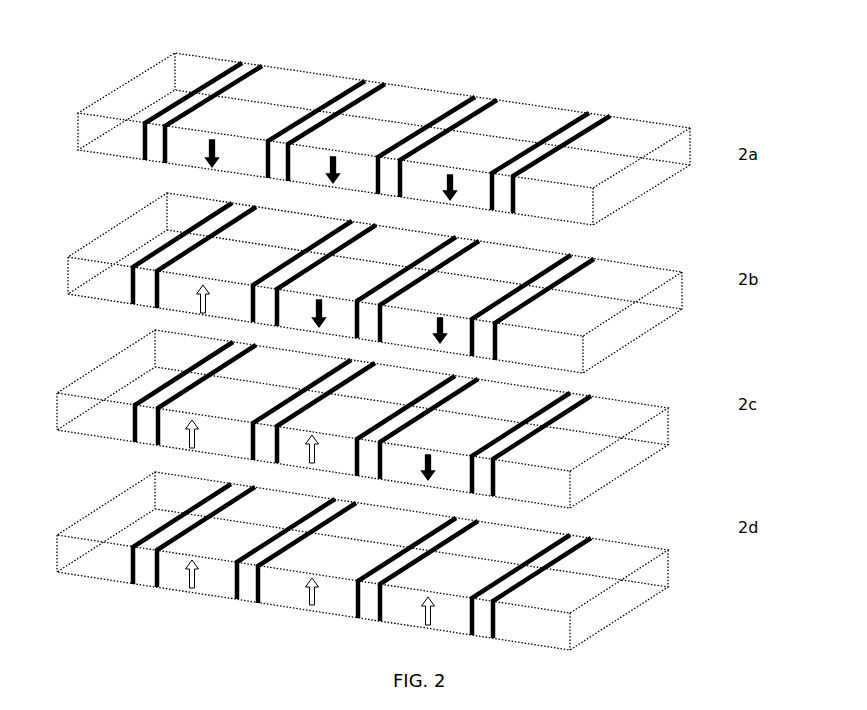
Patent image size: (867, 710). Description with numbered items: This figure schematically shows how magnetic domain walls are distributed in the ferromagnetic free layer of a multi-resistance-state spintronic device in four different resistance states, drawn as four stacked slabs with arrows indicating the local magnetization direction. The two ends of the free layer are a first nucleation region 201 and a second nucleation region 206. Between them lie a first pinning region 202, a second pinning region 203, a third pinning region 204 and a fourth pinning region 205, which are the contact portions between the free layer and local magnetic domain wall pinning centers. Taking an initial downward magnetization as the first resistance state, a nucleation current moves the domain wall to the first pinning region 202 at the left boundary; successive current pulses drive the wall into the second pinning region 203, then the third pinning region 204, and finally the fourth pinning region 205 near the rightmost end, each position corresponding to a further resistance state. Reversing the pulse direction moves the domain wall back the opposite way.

The first nucleation region 201 is at (190, 48).
The first pinning region 202 is at (255, 62).
The second pinning region 203 is at (375, 75).
The third pinning region 204 is at (482, 93).
The fourth pinning region 205 is at (599, 113).
The second nucleation region 206 is at (677, 123).